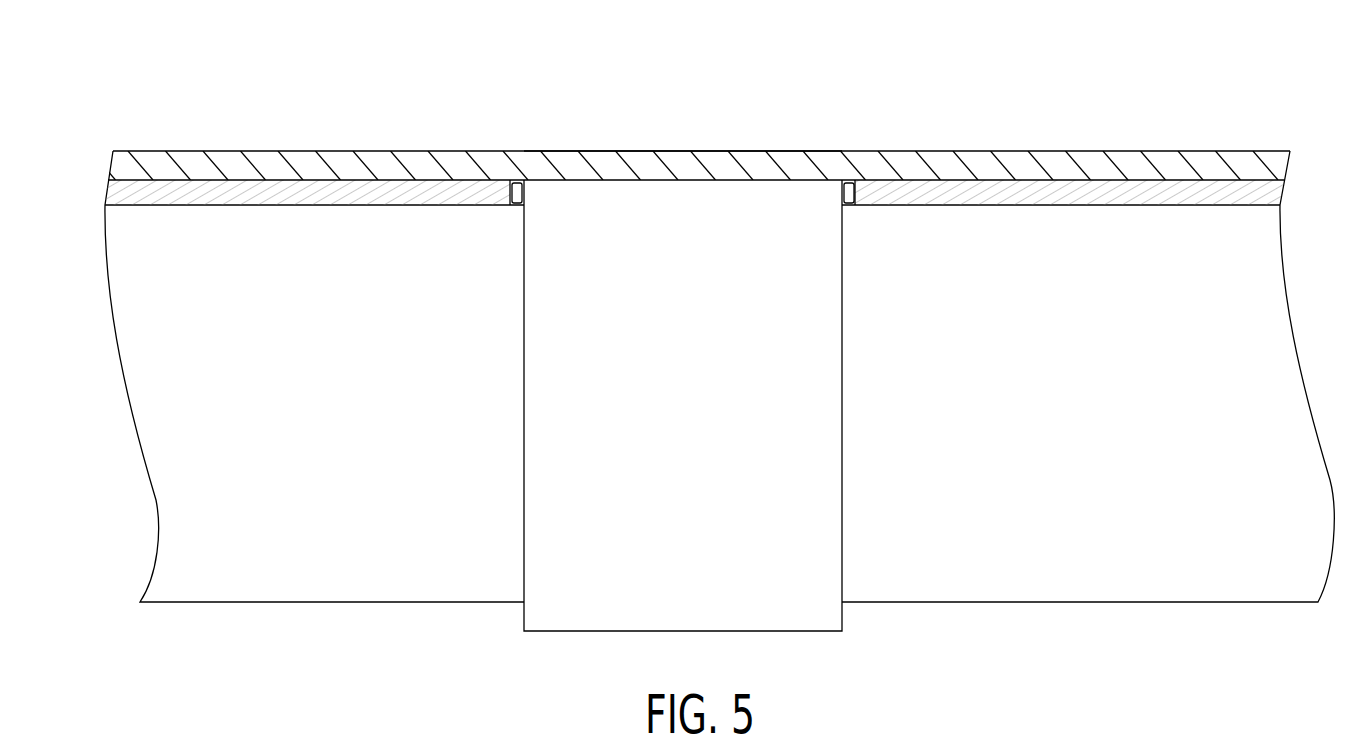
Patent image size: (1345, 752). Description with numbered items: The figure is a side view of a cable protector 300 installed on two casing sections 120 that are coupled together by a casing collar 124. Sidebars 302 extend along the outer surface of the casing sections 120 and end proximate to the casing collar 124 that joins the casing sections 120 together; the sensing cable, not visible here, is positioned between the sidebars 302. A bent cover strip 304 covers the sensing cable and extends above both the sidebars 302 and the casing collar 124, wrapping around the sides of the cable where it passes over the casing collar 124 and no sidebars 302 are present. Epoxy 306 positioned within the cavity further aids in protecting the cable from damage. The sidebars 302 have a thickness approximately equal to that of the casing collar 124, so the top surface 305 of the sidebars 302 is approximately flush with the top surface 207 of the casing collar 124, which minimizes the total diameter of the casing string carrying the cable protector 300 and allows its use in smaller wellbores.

The cable protector 300 is at (845, 74).
The casing sections 120 is at (357, 585).
The casing collar 124 is at (765, 607).
The sidebars 302 is at (303, 193).
The bent cover strip 304 is at (650, 172).
The top surface of the sidebars 305 is at (390, 180).
The epoxy 306 is at (521, 188).
The top surface of the casing collar 207 is at (727, 172).